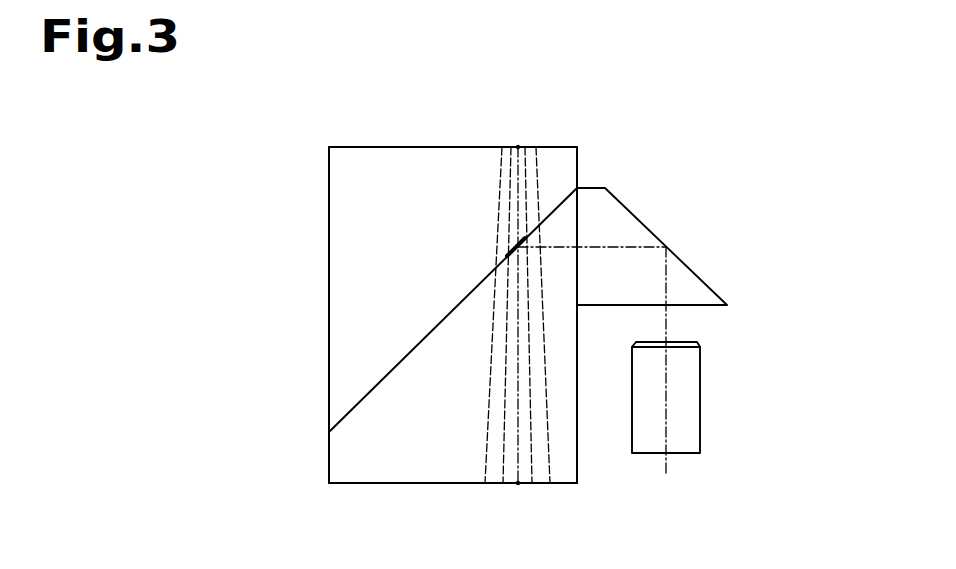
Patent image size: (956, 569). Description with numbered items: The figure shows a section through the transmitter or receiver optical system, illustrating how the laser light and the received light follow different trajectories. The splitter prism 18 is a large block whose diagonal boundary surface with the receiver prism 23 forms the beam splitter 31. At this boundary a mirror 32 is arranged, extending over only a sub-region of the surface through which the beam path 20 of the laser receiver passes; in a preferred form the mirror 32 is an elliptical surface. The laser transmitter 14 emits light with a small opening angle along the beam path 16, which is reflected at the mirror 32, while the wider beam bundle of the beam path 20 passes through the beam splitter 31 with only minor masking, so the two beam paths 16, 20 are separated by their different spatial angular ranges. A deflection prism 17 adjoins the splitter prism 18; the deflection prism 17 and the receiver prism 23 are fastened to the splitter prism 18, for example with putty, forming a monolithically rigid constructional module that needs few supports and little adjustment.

The laser transmitter 14 is at (704, 408).
The beam path 16 is at (667, 322).
The deflection prism 17 is at (651, 222).
The splitter prism 18 is at (312, 463).
The beam path 20 is at (518, 202).
The receiver prism 23 is at (310, 267).
The beam splitter 31 is at (423, 338).
The mirror 32 is at (515, 247).